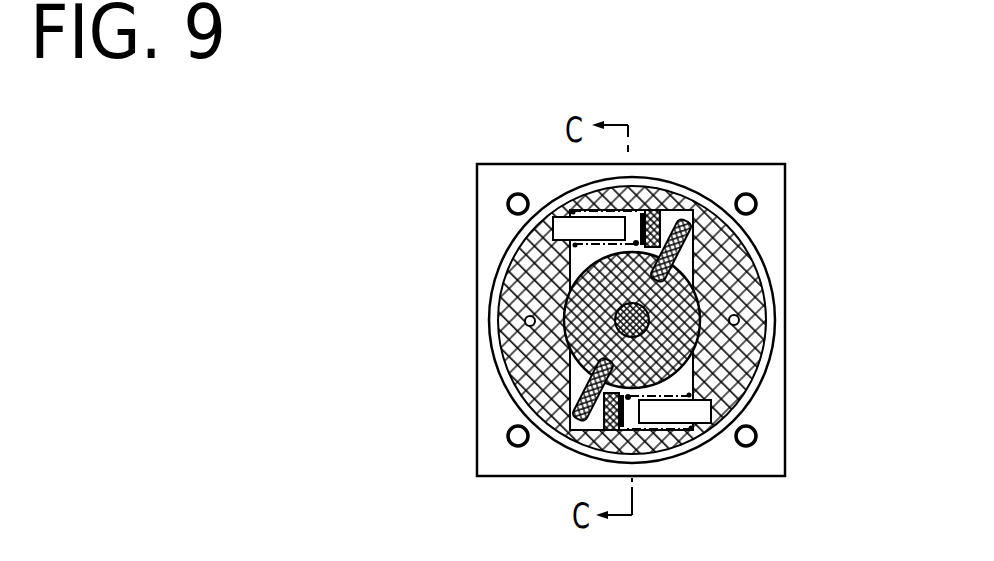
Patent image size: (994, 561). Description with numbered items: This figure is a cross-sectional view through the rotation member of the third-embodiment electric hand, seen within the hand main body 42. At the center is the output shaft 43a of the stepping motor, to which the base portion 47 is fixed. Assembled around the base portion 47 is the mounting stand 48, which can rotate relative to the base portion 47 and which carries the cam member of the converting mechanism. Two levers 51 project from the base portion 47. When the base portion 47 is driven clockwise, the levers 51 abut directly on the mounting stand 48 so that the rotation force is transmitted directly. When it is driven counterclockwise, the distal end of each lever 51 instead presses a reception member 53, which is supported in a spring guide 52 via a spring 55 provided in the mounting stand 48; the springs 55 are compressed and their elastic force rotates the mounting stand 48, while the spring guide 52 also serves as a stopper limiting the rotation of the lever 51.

The hand main body 42 is at (773, 239).
The output shaft 43a is at (650, 318).
The base portion 47 is at (689, 335).
The mounting stand 48 is at (737, 373).
The lever 51 is at (678, 231).
The spring guide 52 is at (566, 212).
The reception member 53 is at (660, 211).
The spring 55 is at (633, 207).